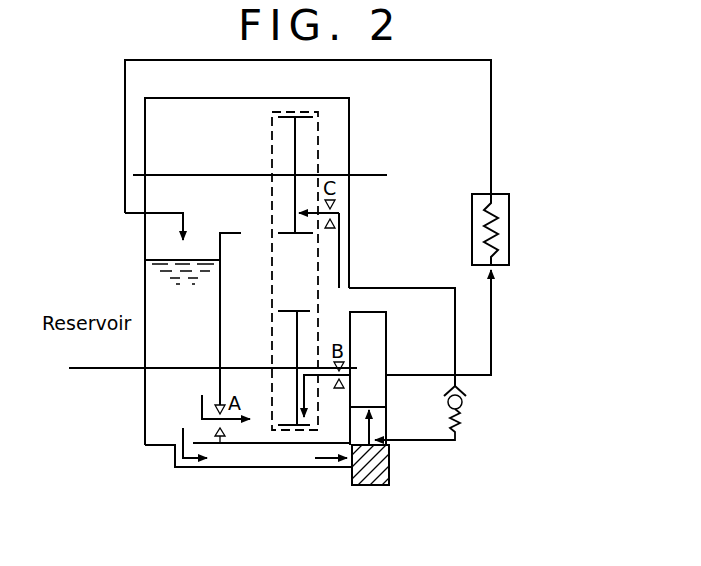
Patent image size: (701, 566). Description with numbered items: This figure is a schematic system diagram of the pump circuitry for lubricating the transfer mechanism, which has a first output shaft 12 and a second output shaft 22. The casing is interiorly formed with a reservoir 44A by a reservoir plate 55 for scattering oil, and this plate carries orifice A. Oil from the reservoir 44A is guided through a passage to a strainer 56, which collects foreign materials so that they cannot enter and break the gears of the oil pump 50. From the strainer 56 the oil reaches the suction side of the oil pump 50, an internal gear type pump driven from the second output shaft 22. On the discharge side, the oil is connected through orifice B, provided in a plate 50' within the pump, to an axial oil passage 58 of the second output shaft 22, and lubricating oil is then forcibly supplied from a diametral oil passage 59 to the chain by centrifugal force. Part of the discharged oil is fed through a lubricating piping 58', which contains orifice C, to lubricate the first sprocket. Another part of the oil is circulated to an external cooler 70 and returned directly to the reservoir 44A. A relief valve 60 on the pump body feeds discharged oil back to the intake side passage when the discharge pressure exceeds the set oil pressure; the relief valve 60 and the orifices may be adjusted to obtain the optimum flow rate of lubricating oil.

The first output shaft 12 is at (376, 175).
The second output shaft 22 is at (112, 370).
The reservoir 44A is at (203, 335).
The reservoir plate 55 is at (221, 333).
The oil pump 50 is at (420, 357).
The plate within the pump 50' is at (338, 343).
The axial oil passage 58 is at (309, 271).
The lubricating piping 58' is at (349, 244).
The diametral oil passage 59 is at (304, 392).
The relief valve 60 is at (462, 403).
The external cooler 70 is at (509, 215).
The strainer 56 is at (372, 485).